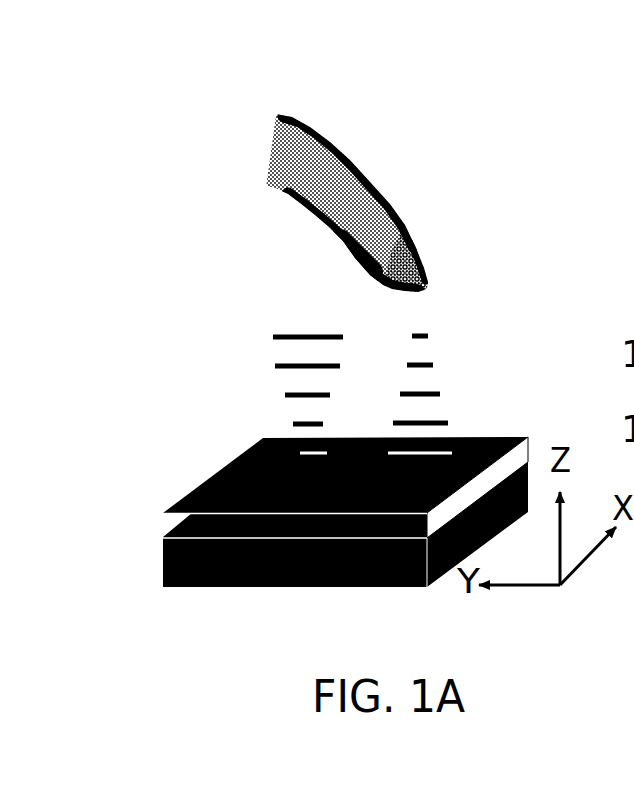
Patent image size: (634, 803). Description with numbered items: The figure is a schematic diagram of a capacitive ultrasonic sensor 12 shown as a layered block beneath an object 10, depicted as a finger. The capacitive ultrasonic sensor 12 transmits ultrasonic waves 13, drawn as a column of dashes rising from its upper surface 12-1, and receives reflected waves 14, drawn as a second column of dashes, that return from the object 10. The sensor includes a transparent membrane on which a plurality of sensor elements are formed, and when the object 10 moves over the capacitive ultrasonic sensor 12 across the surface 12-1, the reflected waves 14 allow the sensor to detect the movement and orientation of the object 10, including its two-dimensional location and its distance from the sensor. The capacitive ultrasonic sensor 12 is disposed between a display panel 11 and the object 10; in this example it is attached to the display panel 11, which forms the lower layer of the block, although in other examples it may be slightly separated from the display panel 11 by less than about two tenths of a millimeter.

The object 10 is at (328, 132).
The display panel 11 is at (163, 563).
The capacitive ultrasonic sensor 12 is at (163, 528).
The surface 12-1 is at (378, 497).
The ultrasonic waves 13 is at (272, 370).
The reflected waves 14 is at (475, 369).